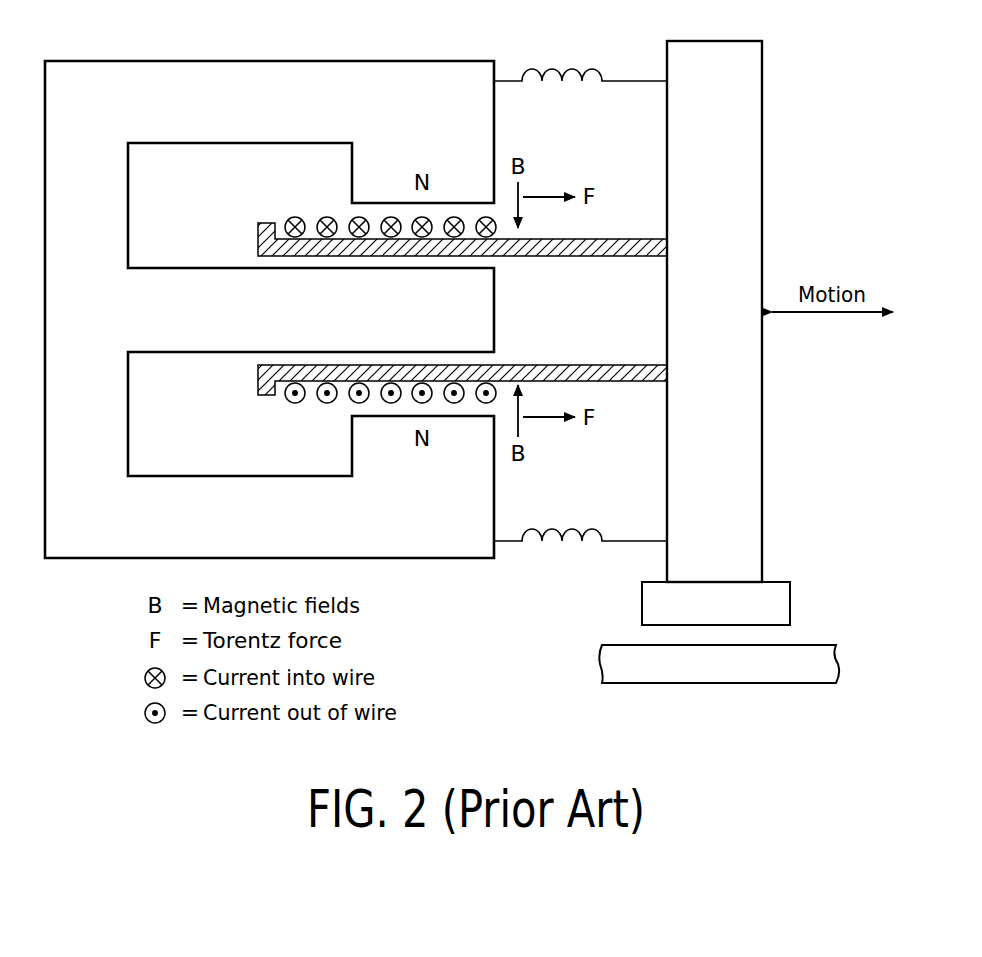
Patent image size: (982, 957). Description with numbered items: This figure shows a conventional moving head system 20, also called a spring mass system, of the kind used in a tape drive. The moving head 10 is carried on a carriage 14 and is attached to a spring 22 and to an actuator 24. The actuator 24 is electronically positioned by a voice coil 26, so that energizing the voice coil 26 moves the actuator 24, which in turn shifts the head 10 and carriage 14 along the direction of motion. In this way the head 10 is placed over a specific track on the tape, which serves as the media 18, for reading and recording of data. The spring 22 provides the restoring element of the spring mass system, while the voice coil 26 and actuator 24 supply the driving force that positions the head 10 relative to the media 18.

The head 10 is at (733, 617).
The carriage 14 is at (701, 363).
The media 18 is at (733, 675).
The moving head system 20 is at (825, 493).
The spring 22 is at (523, 70).
The actuator 24 is at (558, 256).
The voice coil 26 is at (508, 222).